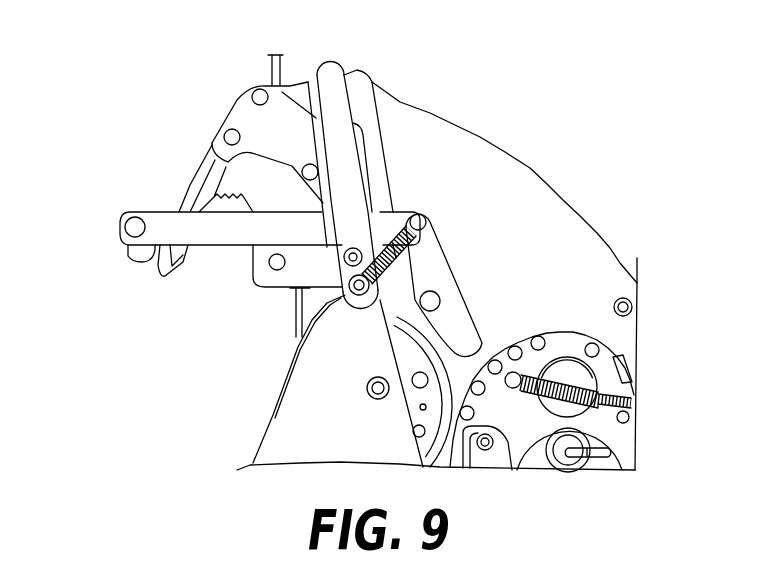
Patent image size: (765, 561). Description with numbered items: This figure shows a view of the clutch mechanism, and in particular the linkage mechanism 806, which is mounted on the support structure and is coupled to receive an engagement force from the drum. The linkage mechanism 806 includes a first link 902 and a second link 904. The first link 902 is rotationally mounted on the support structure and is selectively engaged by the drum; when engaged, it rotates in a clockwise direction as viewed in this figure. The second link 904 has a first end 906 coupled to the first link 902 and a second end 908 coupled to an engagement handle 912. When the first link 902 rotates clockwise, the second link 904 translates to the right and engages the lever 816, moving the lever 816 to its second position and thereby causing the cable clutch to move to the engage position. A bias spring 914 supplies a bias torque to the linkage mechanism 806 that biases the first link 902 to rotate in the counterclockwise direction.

The linkage mechanism 806 is at (478, 180).
The lever 816 is at (187, 188).
The first link 902 is at (434, 269).
The second link 904 is at (210, 236).
The first end 906 is at (428, 225).
The second end 908 is at (125, 226).
The engagement handle 912 is at (142, 261).
The bias spring 914 is at (378, 292).